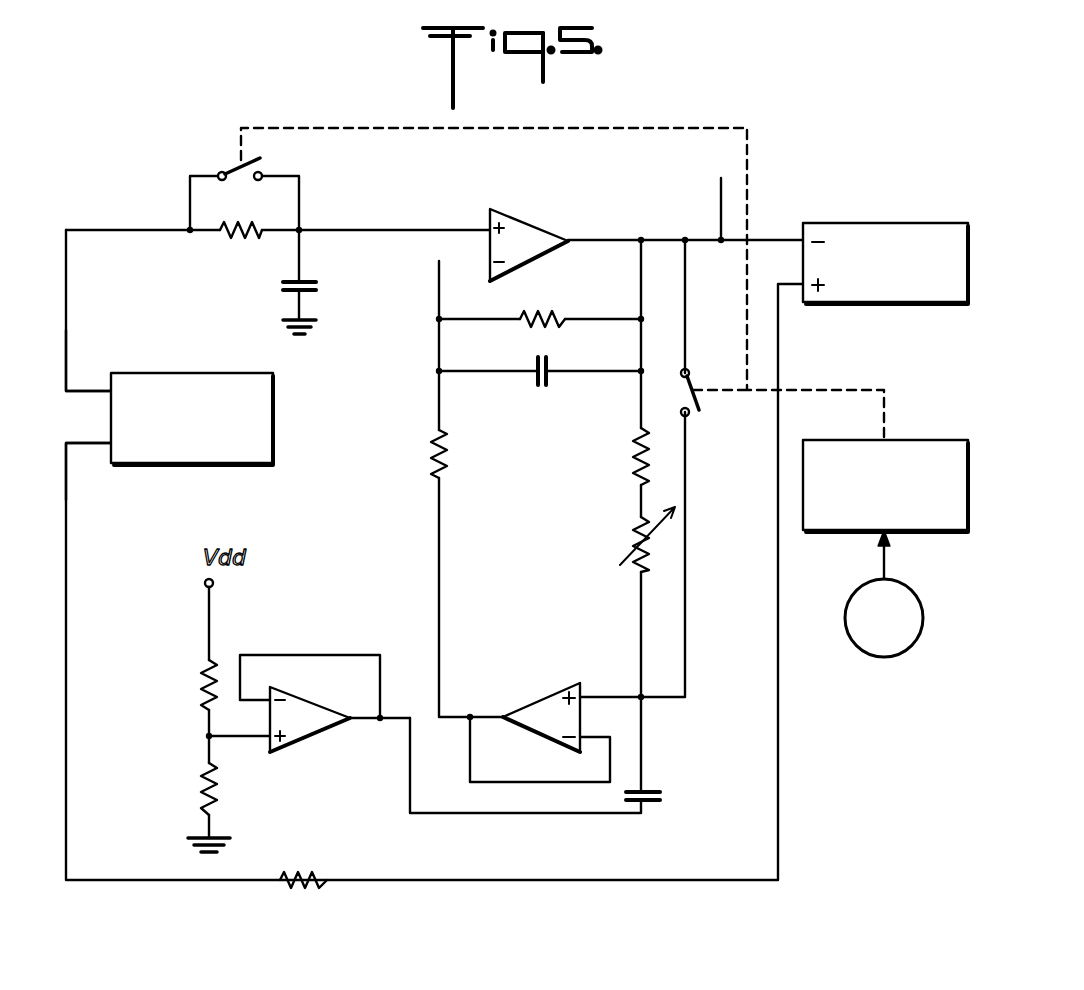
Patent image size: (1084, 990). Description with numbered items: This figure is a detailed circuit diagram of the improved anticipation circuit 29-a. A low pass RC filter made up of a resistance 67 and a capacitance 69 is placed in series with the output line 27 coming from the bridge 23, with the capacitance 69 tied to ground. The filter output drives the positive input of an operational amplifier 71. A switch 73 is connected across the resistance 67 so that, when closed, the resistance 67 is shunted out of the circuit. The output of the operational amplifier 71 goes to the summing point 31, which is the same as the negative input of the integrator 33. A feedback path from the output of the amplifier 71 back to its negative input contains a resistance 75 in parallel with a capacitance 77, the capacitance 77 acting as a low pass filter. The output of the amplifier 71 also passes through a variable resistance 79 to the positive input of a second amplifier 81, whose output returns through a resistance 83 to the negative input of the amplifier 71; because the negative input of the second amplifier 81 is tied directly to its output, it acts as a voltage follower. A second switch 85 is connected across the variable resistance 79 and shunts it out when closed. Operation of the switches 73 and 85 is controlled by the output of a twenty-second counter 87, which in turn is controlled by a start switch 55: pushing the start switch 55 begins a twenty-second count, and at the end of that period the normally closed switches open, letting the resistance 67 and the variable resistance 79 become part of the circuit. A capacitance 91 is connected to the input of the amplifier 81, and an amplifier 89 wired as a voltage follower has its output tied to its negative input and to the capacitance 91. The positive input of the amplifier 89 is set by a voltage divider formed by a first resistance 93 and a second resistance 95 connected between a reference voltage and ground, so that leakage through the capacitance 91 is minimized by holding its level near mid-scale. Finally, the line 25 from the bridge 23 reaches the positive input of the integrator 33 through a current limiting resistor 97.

The bridge 23 is at (194, 373).
The line 25 is at (92, 458).
The output line 27 is at (96, 383).
The anticipation circuit 29-a is at (414, 121).
The summing point 31 is at (719, 250).
The integrator 33 is at (852, 222).
The start switch 55 is at (912, 592).
The resistance 67 is at (236, 240).
The capacitance 69 is at (320, 284).
The operational amplifier 71 is at (525, 226).
The switch 73 is at (232, 185).
The resistance 75 is at (545, 312).
The capacitance 77 is at (536, 385).
The variable resistance 79 is at (614, 475).
The second amplifier 81 is at (530, 700).
The resistance 83 is at (448, 468).
The second switch 85 is at (690, 371).
The 20-second counter 87 is at (905, 440).
The amplifier 89 is at (295, 745).
The capacitance 91 is at (660, 792).
The first resistance 93 is at (202, 684).
The second resistance 95 is at (202, 768).
The current limiting resistor 97 is at (305, 870).